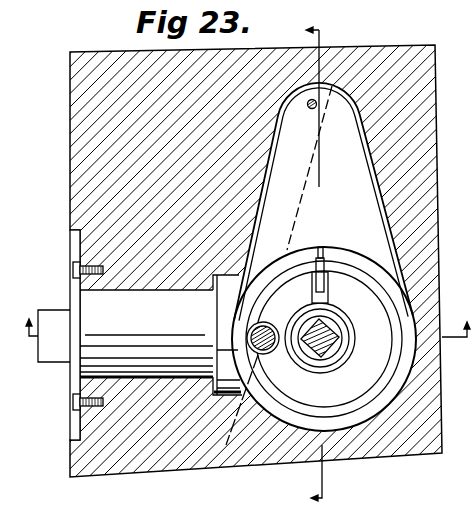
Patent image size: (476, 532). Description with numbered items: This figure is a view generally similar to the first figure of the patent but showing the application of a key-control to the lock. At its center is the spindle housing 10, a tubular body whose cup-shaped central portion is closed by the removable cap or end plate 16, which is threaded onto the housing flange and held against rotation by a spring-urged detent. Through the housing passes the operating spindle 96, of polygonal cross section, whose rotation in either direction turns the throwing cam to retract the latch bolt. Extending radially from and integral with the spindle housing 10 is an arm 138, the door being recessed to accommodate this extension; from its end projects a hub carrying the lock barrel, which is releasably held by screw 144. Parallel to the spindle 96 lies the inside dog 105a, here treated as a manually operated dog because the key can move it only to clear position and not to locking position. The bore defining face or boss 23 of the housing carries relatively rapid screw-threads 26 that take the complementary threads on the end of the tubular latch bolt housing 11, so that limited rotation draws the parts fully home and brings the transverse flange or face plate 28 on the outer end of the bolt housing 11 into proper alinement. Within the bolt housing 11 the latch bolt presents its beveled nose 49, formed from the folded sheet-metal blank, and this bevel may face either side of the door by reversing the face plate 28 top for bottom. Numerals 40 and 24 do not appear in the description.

The housing 40 is at (334, 31).
The arm 138 is at (365, 193).
The removable cap or end plate 16 is at (375, 373).
The spindle housing 10 is at (367, 415).
The operating spindle 96 is at (328, 335).
The inside dog 105a is at (277, 300).
The screw 144 is at (309, 108).
The section line 24- 24 is at (303, 266).
The screw-threads 26 is at (248, 334).
The transverse flange or face plate 28 is at (78, 245).
The nose 49 is at (55, 352).
The latch bolt housing 11 is at (148, 379).
The bore defining face or boss 23 is at (220, 398).